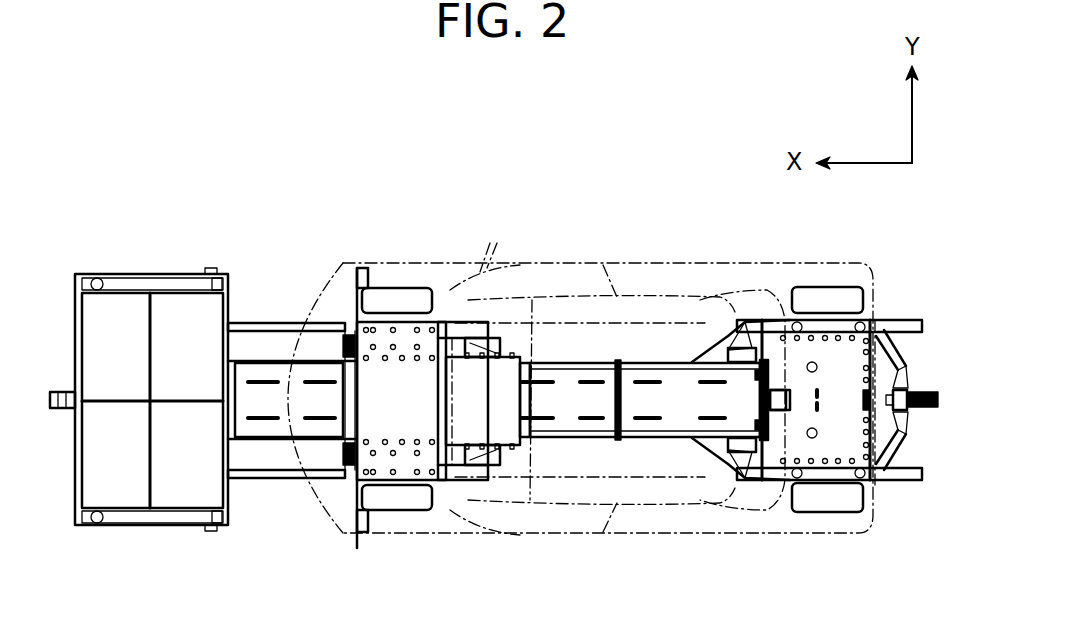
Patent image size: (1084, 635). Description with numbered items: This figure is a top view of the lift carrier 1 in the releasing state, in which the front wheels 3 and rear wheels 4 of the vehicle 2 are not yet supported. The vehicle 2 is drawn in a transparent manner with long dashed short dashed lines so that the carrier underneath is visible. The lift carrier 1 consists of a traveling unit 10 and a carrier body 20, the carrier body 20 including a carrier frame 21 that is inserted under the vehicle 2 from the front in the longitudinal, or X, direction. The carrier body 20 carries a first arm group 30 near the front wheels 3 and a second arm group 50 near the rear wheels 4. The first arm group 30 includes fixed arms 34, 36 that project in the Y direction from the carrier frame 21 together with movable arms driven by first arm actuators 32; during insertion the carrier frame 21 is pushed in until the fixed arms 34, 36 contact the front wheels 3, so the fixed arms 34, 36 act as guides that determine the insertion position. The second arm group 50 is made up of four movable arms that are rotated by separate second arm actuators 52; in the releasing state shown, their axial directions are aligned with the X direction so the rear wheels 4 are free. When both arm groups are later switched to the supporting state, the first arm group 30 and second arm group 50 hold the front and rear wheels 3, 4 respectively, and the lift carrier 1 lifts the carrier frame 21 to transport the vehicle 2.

The lift carrier 1 is at (617, 609).
The vehicle 2 is at (297, 295).
The front wheels 3 is at (393, 288).
The rear wheels 4 is at (825, 287).
The traveling unit 10 is at (138, 298).
The carrier body 20 is at (608, 187).
The carrier frame 21 is at (627, 370).
The first arm group 30 is at (441, 227).
The first arm actuators 32 is at (478, 345).
The fixed arm 34 is at (357, 518).
The fixed arm 36 is at (357, 287).
The second arm group 50 is at (877, 249).
The second arm actuators 52 is at (737, 350).